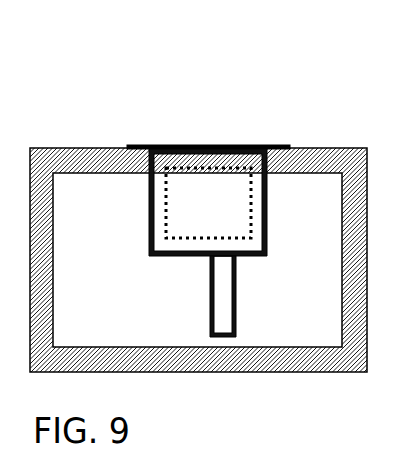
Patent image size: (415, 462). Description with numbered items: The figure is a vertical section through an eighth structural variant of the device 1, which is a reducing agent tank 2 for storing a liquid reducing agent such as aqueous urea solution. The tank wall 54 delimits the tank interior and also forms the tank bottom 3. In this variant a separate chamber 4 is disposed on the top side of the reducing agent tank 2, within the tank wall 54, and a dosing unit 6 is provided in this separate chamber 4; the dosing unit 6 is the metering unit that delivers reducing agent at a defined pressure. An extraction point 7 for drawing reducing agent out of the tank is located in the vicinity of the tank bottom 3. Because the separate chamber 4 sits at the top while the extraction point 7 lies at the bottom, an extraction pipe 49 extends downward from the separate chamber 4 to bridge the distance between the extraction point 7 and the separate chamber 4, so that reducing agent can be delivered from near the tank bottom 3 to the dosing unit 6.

The device 1 is at (299, 126).
The reducing agent tank 2 is at (68, 148).
The tank bottom 3 is at (246, 350).
The separate chamber 4 is at (170, 146).
The dosing unit 6 is at (221, 168).
The extraction point 7 is at (210, 331).
The extraction pipe 49 is at (237, 290).
The tank wall 54 is at (328, 148).